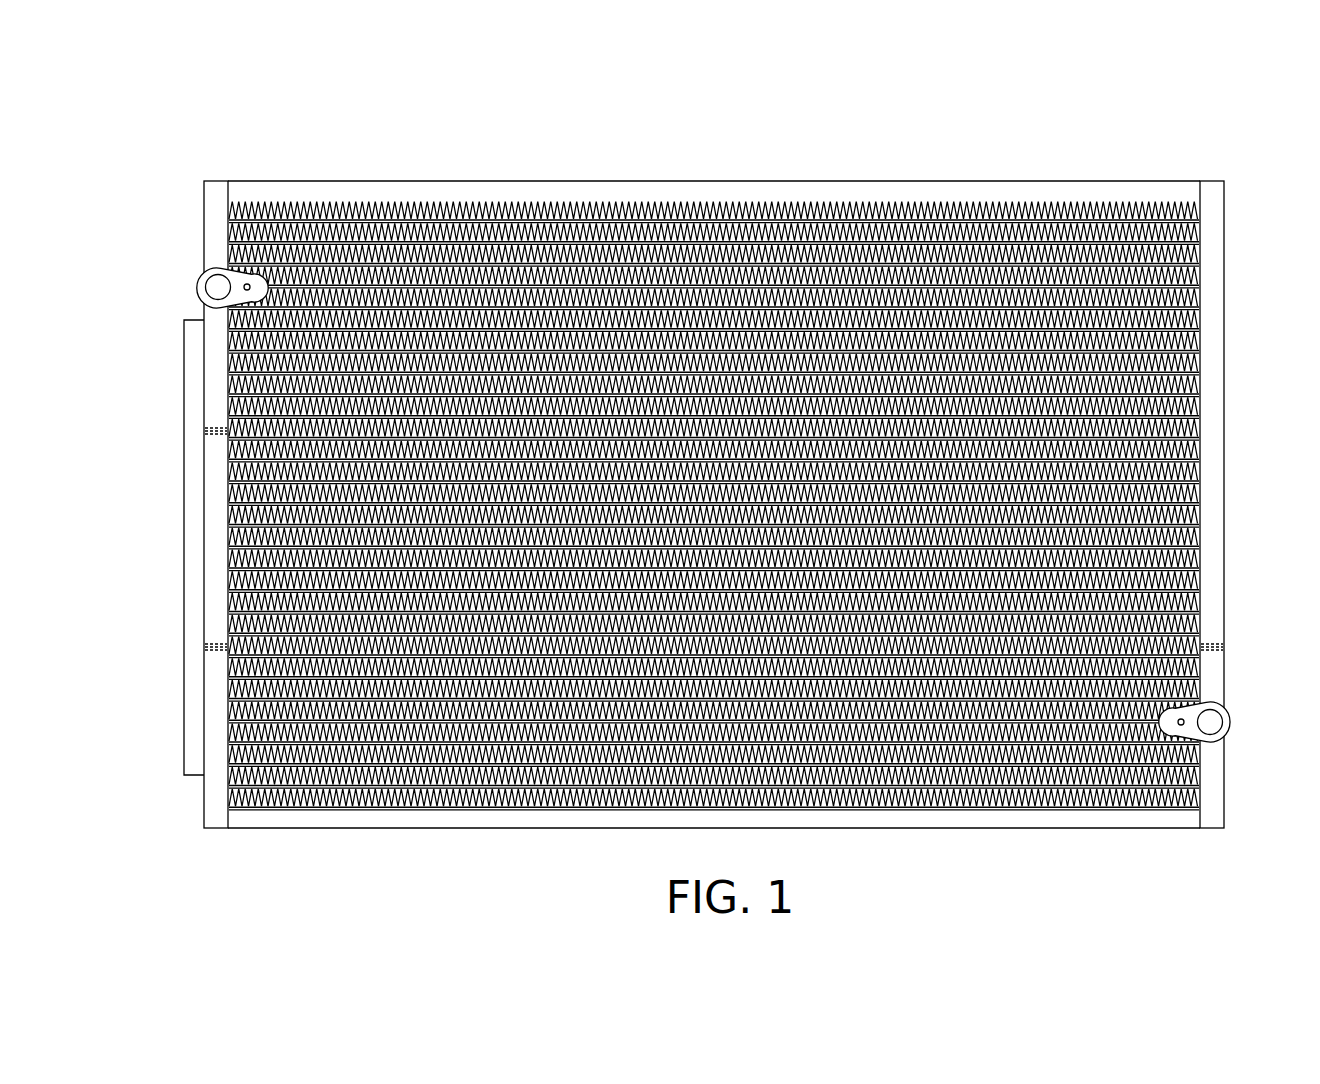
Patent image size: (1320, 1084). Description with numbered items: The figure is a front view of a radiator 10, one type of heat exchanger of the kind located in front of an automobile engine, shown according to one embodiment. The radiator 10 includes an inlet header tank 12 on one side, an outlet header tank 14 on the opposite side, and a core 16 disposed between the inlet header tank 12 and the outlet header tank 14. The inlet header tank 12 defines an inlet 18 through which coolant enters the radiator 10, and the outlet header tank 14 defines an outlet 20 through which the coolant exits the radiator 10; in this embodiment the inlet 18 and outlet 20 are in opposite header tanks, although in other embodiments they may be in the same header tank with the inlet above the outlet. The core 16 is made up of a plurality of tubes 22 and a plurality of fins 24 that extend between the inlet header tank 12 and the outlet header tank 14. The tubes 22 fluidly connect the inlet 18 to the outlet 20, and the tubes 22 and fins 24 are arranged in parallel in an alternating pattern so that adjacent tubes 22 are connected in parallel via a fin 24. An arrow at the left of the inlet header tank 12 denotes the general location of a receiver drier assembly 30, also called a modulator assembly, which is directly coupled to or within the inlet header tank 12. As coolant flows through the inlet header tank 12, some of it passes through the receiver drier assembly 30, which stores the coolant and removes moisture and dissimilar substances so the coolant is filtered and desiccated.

The radiator 10 is at (1090, 120).
The inlet header tank 12 is at (214, 181).
The outlet header tank 14 is at (1212, 181).
The core 16 is at (947, 298).
The inlet 18 is at (202, 287).
The outlet 20 is at (1246, 722).
The tubes 22 is at (745, 224).
The fins 24 is at (559, 201).
The receiver drier assembly 30 is at (182, 598).